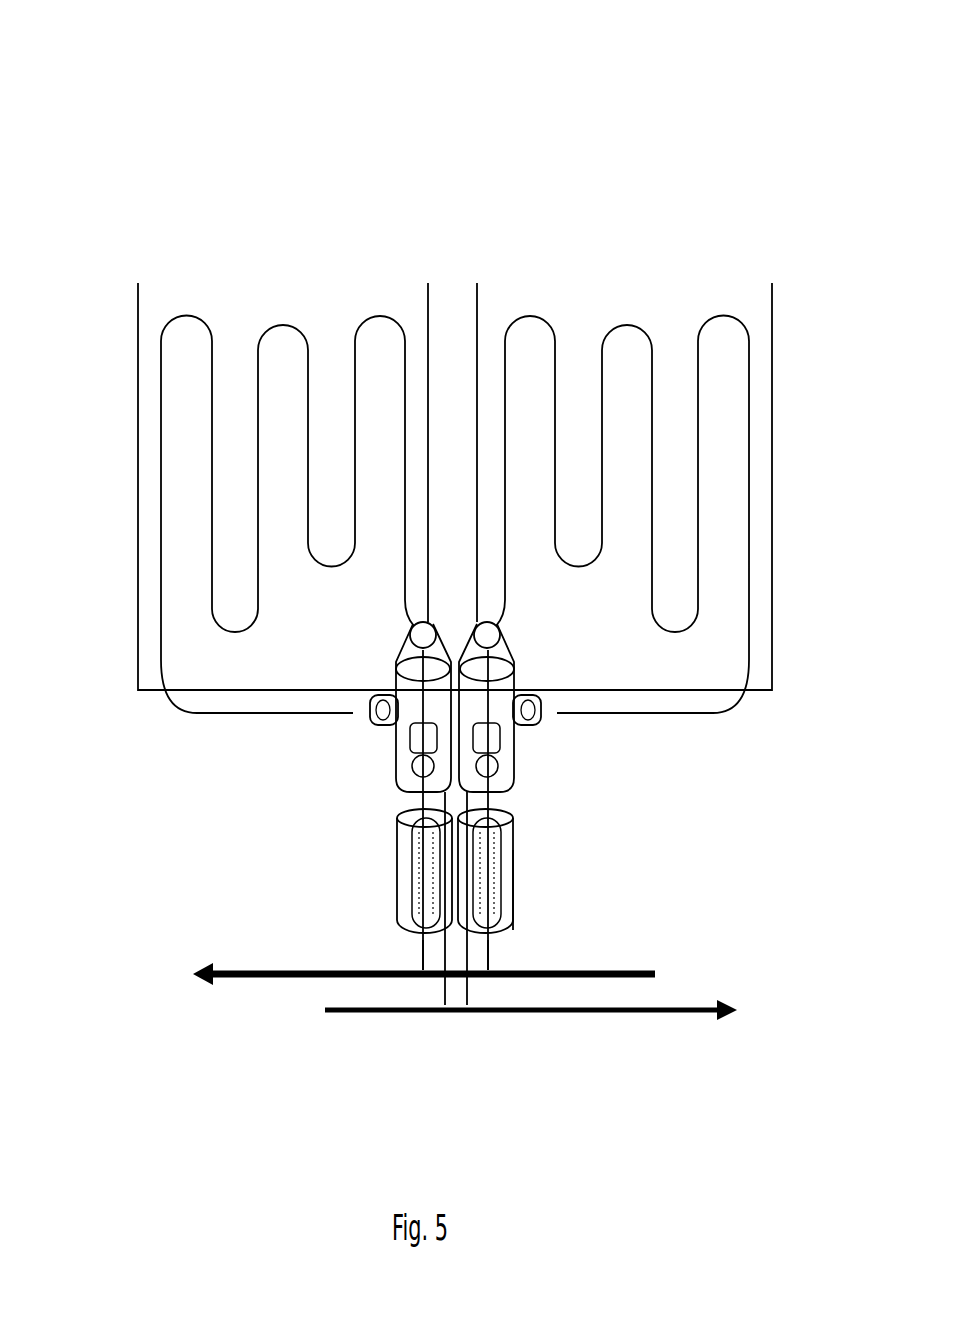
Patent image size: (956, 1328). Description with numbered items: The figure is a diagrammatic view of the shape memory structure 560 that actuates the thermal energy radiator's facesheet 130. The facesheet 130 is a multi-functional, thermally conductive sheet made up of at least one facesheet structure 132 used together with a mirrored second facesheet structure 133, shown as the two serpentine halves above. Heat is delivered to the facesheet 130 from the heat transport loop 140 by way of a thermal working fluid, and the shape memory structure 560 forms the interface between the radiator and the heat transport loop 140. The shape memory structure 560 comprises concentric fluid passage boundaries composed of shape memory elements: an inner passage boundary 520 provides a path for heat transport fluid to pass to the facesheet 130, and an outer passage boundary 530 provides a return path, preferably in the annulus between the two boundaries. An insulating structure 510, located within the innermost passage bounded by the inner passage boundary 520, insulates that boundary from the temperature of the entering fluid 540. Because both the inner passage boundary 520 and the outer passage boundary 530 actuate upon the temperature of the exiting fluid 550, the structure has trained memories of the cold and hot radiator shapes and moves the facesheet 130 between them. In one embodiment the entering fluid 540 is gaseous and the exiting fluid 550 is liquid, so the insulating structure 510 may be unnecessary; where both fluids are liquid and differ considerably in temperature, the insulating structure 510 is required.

The facesheet 130 is at (204, 236).
The facesheet structure 132 is at (219, 158).
The mirrored second facesheet structure 133 is at (643, 148).
The heat transport loop 140 is at (403, 533).
The insulating structure 510 is at (499, 866).
The inner passage boundary 520 is at (504, 894).
The outer passage boundary 530 is at (519, 898).
The entering fluid 540 is at (494, 957).
The exiting fluid 550 is at (440, 969).
The shape memory structure 560 is at (273, 876).